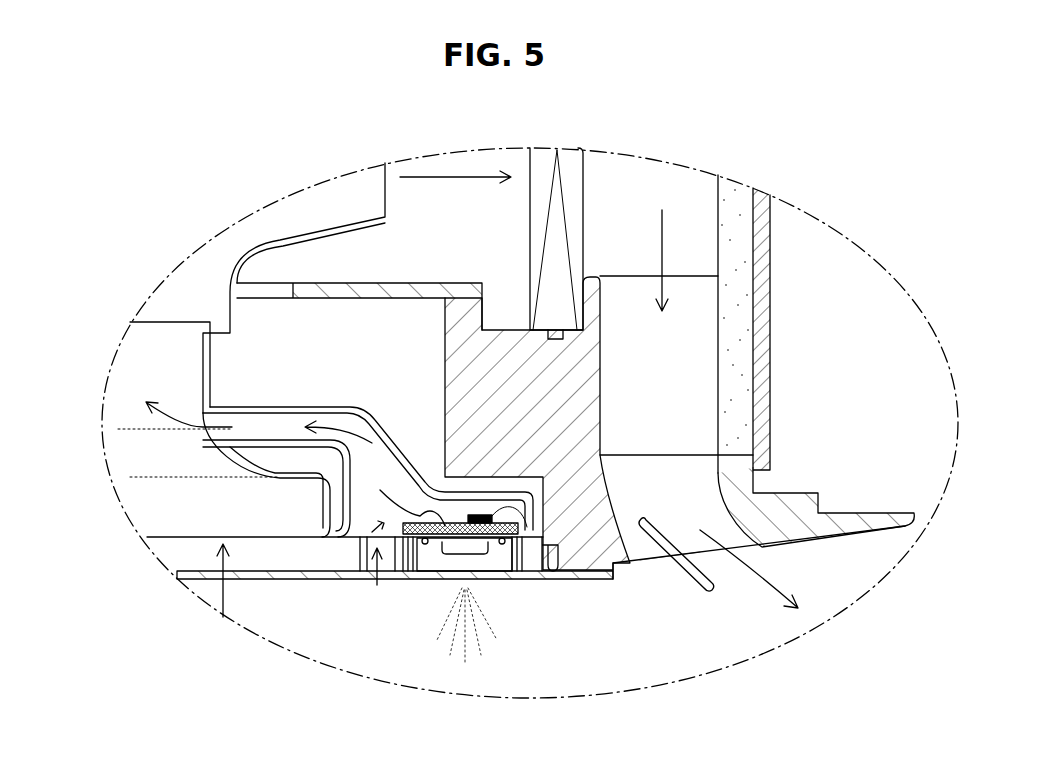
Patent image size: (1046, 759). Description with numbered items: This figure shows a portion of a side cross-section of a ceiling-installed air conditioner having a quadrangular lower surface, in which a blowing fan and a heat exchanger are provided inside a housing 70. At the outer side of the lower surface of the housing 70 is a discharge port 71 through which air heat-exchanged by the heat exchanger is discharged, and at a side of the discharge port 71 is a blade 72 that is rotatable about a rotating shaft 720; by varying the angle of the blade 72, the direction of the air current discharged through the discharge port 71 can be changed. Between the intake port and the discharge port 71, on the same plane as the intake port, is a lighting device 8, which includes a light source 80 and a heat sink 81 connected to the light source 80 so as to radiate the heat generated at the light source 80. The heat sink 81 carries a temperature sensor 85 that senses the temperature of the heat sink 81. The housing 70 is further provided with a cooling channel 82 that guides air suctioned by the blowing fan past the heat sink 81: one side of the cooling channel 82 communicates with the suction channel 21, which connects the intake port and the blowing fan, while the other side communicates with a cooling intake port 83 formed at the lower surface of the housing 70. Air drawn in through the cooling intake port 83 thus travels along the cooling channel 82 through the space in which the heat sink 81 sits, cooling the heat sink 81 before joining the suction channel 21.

The suction channel 21 is at (145, 388).
The housing 70 is at (770, 230).
The discharge port 71 is at (698, 509).
The blade 72 is at (706, 588).
The rotating shaft 720 is at (670, 553).
The lighting device 8 is at (482, 581).
The light source 80 is at (455, 543).
The heat sink 81 is at (415, 583).
The cooling channel 82 is at (345, 502).
The cooling intake port 83 is at (362, 540).
The temperature sensor 85 is at (527, 527).